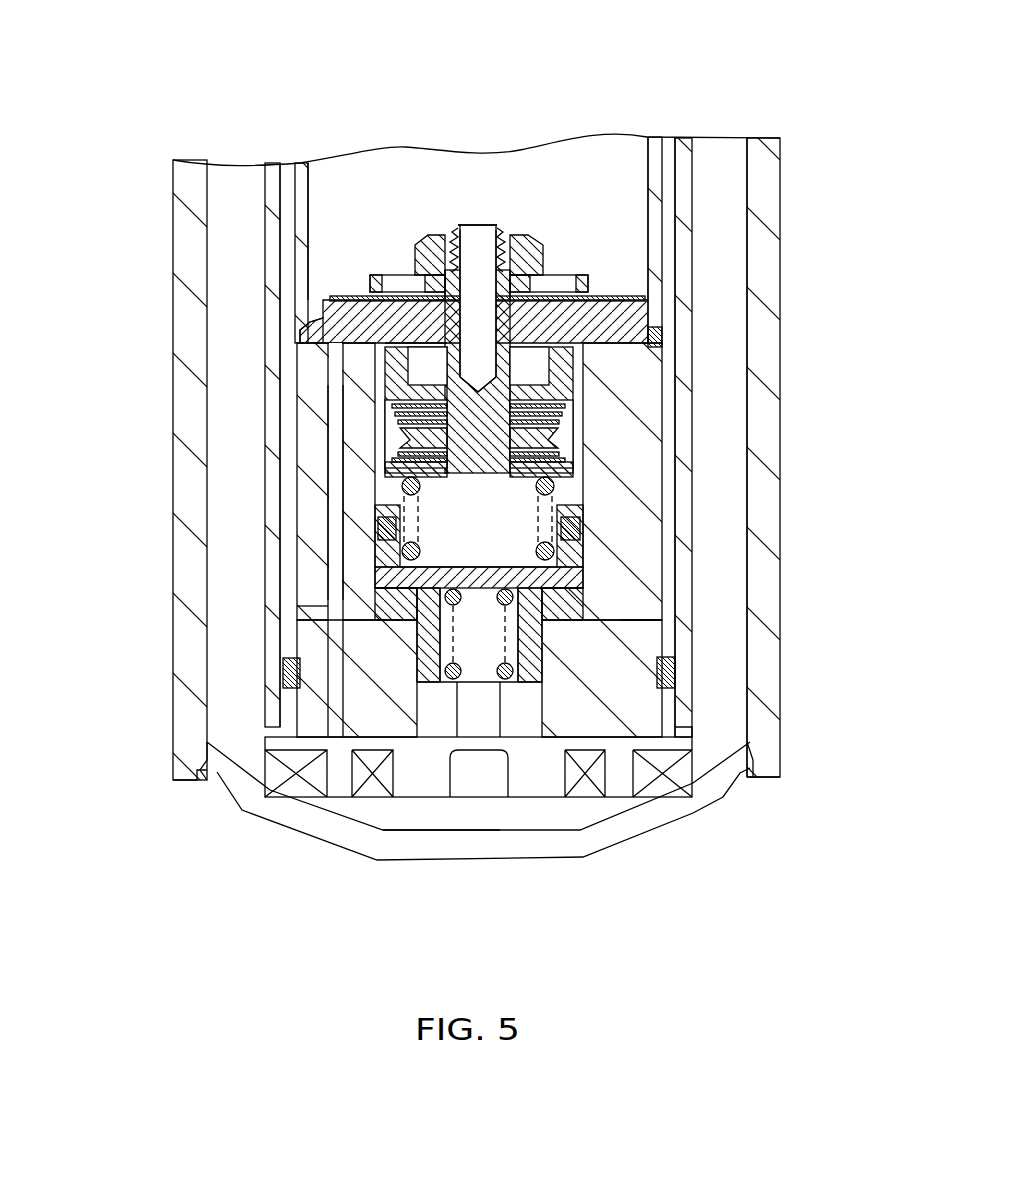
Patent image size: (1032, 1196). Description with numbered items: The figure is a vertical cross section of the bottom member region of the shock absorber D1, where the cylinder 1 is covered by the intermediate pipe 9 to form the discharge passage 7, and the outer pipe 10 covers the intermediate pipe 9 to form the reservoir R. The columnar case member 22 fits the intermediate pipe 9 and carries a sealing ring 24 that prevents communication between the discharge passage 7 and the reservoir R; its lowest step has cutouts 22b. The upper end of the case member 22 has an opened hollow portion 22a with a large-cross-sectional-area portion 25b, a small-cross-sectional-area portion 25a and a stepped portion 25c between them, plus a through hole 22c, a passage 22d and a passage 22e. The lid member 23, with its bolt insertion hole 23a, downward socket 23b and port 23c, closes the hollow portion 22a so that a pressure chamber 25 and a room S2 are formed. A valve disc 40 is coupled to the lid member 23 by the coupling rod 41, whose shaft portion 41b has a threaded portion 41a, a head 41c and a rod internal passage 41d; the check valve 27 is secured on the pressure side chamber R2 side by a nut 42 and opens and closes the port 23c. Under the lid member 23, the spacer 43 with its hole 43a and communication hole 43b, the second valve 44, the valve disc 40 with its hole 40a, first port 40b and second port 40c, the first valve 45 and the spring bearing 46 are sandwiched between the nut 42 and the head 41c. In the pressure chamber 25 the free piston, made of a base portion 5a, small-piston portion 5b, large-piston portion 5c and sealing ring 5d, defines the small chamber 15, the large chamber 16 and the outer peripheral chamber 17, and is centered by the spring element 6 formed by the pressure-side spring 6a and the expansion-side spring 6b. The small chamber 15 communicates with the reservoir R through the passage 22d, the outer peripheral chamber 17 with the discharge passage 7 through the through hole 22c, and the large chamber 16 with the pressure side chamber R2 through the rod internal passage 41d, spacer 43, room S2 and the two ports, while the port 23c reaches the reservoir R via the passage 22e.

The shock absorber D1 is at (156, 126).
The cylinder 1 is at (655, 150).
The discharge passage 7 is at (668, 150).
The intermediate pipe 9 is at (693, 168).
The outer pipe 10 is at (772, 175).
The reservoir R is at (715, 200).
The pressure side chamber R2 is at (331, 205).
The room S2 is at (372, 443).
The small chamber 15 is at (390, 822).
The large chamber 16 is at (700, 712).
The outer peripheral chamber 17 is at (700, 760).
The case member 22 is at (650, 598).
The hollow portion 22a is at (328, 606).
The cutouts 22b is at (290, 795).
The through hole 22c is at (650, 622).
The passage 22d is at (470, 820).
The passage 22e is at (252, 742).
The lid member 23 is at (688, 323).
The bolt insertion hole 23a is at (440, 292).
The socket 23b is at (400, 372).
The port 23c is at (298, 333).
The sealing ring 24 is at (680, 680).
The pressure chamber 25 is at (378, 530).
The small-cross-sectional-area portion 25a is at (553, 622).
The large-cross-sectional-area portion 25b is at (590, 510).
The stepped portion 25c is at (425, 633).
The check valve 27 is at (617, 293).
The valve disc 40 is at (598, 432).
The hole 40a is at (335, 300).
The first port 40b is at (382, 456).
The second port 40c is at (574, 465).
The coupling rod 41 is at (507, 208).
The threaded portion 41a is at (455, 235).
The shaft portion 41b is at (480, 222).
The head 41c is at (436, 496).
The rod internal passage 41d is at (487, 232).
The nut 42 is at (530, 248).
The spacer 43 is at (565, 408).
The hole 43a is at (572, 378).
The communication hole 43b is at (437, 380).
The second valve 44 is at (568, 430).
The first valve 45 is at (562, 482).
The spring bearing 46 is at (360, 490).
The base portion 5a is at (520, 570).
The small-piston portion 5b is at (522, 742).
The large-piston portion 5c is at (600, 540).
The sealing ring 5d is at (640, 582).
The spring element 6 is at (420, 703).
The pressure-side spring 6a is at (400, 578).
The expansion-side spring 6b is at (458, 722).